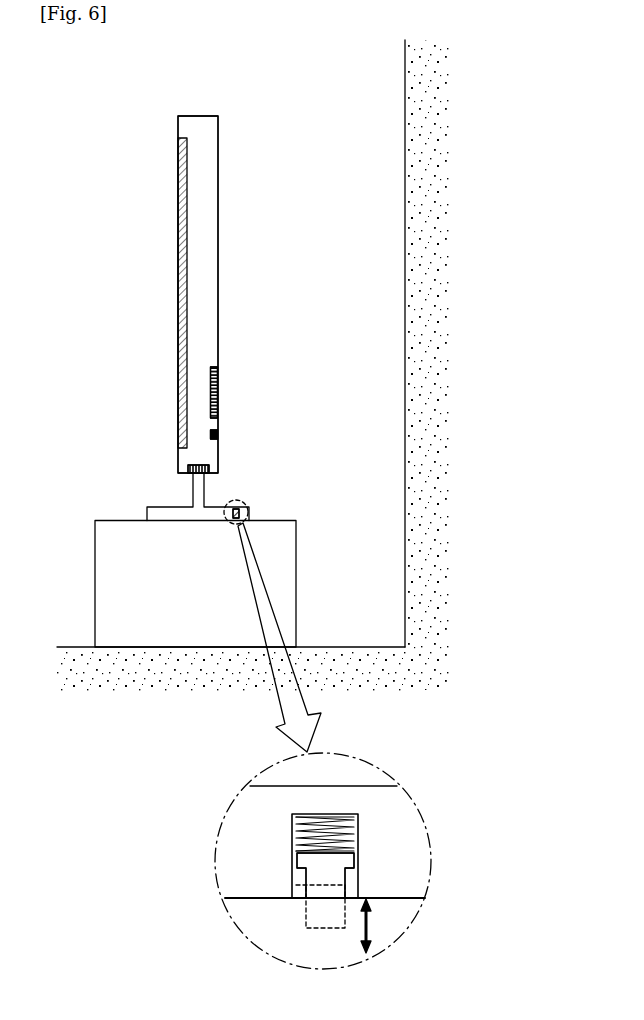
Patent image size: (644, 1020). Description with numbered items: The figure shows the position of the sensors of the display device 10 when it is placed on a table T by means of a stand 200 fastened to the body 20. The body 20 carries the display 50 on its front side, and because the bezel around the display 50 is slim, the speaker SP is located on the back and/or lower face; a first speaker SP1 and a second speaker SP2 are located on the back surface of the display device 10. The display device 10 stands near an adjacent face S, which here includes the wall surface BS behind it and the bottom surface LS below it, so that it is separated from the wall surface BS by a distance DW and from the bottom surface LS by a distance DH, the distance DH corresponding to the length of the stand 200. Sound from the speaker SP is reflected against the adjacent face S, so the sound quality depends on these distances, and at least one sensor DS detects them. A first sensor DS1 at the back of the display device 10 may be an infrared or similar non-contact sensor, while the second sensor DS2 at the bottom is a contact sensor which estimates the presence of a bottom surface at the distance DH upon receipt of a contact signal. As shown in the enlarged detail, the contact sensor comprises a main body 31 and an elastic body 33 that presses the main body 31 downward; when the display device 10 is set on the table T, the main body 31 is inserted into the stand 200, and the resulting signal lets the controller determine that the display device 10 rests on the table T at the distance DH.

The display device 10 is at (89, 92).
The body 20 is at (188, 125).
The display 50 is at (181, 250).
The speaker SP is at (101, 380).
The first speaker SP1 is at (210, 382).
The second speaker SP2 is at (204, 465).
The sensor DS is at (517, 398).
The first sensor DS1 is at (218, 434).
The second sensor DS2 is at (249, 512).
The stand 200 is at (200, 521).
The elastic body 33 is at (355, 830).
The main body 31 is at (330, 876).
The table T is at (95, 580).
The wall surface BS is at (440, 108).
The bottom surface LS is at (92, 680).
The adjacent face S is at (510, 92).
The distance DW is at (405, 70).
The distance DH is at (177, 473).